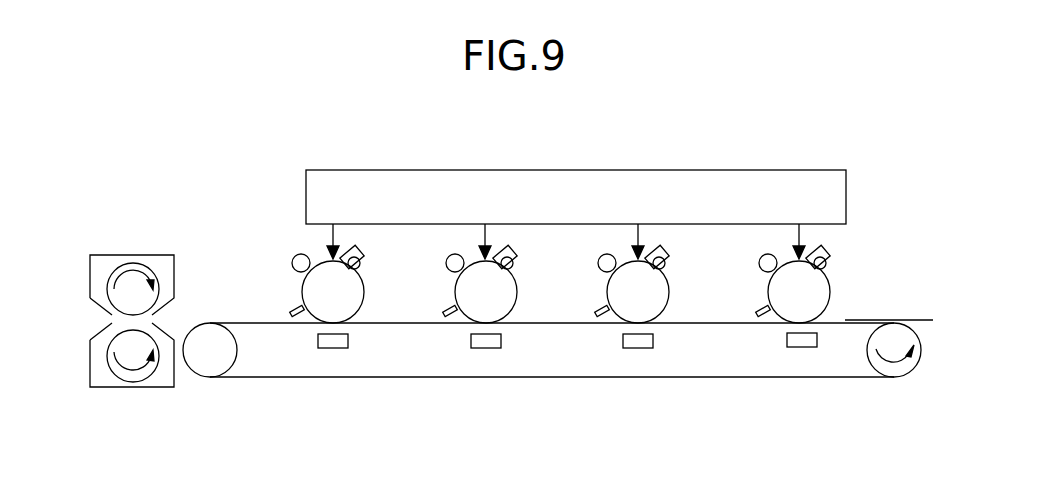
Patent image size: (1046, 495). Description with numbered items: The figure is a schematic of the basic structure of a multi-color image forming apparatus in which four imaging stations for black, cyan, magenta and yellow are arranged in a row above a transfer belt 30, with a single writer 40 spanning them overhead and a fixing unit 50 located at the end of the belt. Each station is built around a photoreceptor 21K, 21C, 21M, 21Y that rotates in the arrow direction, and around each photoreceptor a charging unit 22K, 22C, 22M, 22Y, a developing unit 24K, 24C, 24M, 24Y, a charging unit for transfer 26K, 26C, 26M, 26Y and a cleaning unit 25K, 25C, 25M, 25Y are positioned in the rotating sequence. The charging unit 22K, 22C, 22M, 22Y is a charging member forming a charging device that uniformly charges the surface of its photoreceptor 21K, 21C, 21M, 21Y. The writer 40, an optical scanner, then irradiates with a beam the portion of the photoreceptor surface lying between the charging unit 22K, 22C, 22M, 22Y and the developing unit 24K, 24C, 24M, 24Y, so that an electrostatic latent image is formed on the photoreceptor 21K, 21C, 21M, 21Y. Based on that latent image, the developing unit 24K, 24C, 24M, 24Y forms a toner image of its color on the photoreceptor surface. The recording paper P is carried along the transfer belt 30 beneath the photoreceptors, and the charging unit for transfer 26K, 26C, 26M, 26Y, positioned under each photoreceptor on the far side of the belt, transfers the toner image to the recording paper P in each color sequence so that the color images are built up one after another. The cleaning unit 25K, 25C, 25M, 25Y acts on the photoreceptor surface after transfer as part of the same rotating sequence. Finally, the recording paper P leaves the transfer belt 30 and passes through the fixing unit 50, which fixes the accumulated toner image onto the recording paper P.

The writer 40 is at (535, 210).
The transfer belt 30 is at (432, 377).
The fixing unit 50 is at (152, 225).
The recording paper P is at (888, 320).
The photoreceptor 21K is at (314, 304).
The photoreceptor 21C is at (467, 304).
The photoreceptor 21M is at (618, 304).
The photoreceptor 21Y is at (780, 304).
The charging unit 22K is at (294, 260).
The charging unit 22C is at (449, 256).
The charging unit 22M is at (600, 256).
The charging unit 22Y is at (762, 258).
The developing unit 24K is at (361, 266).
The developing unit 24C is at (514, 266).
The developing unit 24M is at (666, 266).
The developing unit 24Y is at (827, 264).
The cleaning unit 25K is at (292, 309).
The cleaning unit 25C is at (446, 309).
The cleaning unit 25M is at (602, 309).
The cleaning unit 25Y is at (762, 309).
The charging unit for transfer 26K is at (348, 342).
The charging unit for transfer 26C is at (501, 342).
The charging unit for transfer 26M is at (653, 342).
The charging unit for transfer 26Y is at (817, 341).